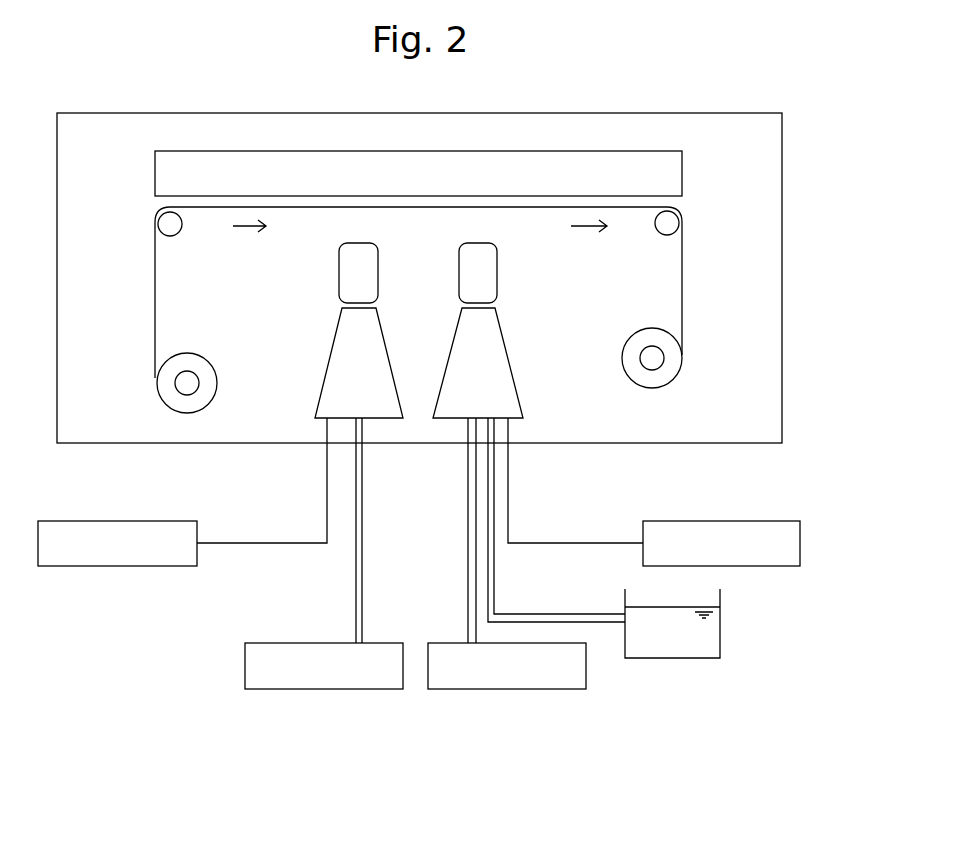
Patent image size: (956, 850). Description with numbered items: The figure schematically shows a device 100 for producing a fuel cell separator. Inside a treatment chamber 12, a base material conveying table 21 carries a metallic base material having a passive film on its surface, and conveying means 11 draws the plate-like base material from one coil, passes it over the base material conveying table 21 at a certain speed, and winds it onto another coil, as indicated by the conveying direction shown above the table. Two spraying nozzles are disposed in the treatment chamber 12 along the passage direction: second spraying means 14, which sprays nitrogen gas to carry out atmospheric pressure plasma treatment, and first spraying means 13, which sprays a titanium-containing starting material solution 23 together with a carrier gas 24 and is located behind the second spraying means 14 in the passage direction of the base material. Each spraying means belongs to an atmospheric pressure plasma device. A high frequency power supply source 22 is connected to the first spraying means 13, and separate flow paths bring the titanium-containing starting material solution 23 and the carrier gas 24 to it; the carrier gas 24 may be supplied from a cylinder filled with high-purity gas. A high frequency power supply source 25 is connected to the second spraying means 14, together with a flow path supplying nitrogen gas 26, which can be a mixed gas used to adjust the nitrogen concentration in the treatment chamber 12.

The device 100 is at (808, 140).
The conveying means 11 is at (210, 361).
The treatment chamber 12 is at (782, 328).
The first spraying means 13 is at (513, 372).
The second spraying means 14 is at (322, 371).
The base material conveying table 21 is at (682, 173).
The high frequency power supply source 22 is at (790, 566).
The titanium-containing starting material solution 23 is at (707, 658).
The carrier gas 24 is at (560, 689).
The high frequency power supply source 25 is at (63, 566).
The nitrogen gas 26 is at (275, 689).